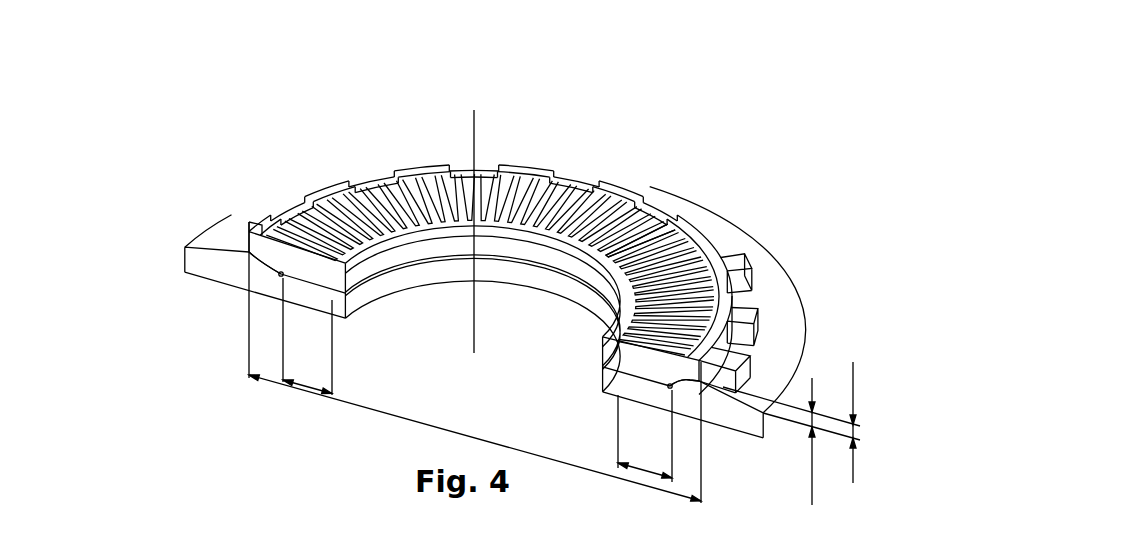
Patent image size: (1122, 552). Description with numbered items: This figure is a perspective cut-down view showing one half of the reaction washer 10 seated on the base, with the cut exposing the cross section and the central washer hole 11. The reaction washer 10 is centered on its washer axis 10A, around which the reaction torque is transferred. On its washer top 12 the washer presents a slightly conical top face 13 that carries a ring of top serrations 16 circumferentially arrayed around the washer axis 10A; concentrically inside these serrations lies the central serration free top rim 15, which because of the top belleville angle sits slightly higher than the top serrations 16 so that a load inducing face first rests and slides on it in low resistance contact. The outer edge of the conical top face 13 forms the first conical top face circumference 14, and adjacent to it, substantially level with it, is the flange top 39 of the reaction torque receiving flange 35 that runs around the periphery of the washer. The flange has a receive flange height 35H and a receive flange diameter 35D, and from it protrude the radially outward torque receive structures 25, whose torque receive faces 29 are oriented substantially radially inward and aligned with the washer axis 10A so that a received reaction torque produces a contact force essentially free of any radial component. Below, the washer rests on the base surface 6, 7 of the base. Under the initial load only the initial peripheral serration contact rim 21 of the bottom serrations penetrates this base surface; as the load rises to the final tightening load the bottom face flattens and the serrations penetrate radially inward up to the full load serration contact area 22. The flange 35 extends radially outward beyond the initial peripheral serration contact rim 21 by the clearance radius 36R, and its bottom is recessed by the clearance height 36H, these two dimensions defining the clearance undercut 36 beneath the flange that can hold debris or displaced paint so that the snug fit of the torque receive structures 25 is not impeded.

The base surface 6 is at (184, 255).
The base surface 7 is at (216, 248).
The reaction washer 10 is at (664, 165).
The washer axis 10A is at (477, 126).
The washer hole 11 is at (535, 246).
The washer top 12 is at (432, 151).
The conical top face 13 is at (600, 355).
The first conical top face circumference 14 is at (716, 293).
The central serration free top rim 15 is at (415, 234).
The top serrations 16 is at (673, 277).
The initial peripheral serration contact rim 21 is at (668, 389).
The full load serration contact area 22 is at (477, 380).
The torque receive structures 25 is at (735, 355).
The torque receive faces 29 is at (748, 321).
The reaction torque receiving flange 35 is at (762, 333).
The receive flange diameter 35D is at (475, 362).
The receive flange height 35H is at (811, 422).
The clearance undercut 36 is at (696, 382).
The clearance radius 36R is at (505, 369).
The clearance height 36H is at (791, 441).
The flange top 39 is at (750, 266).